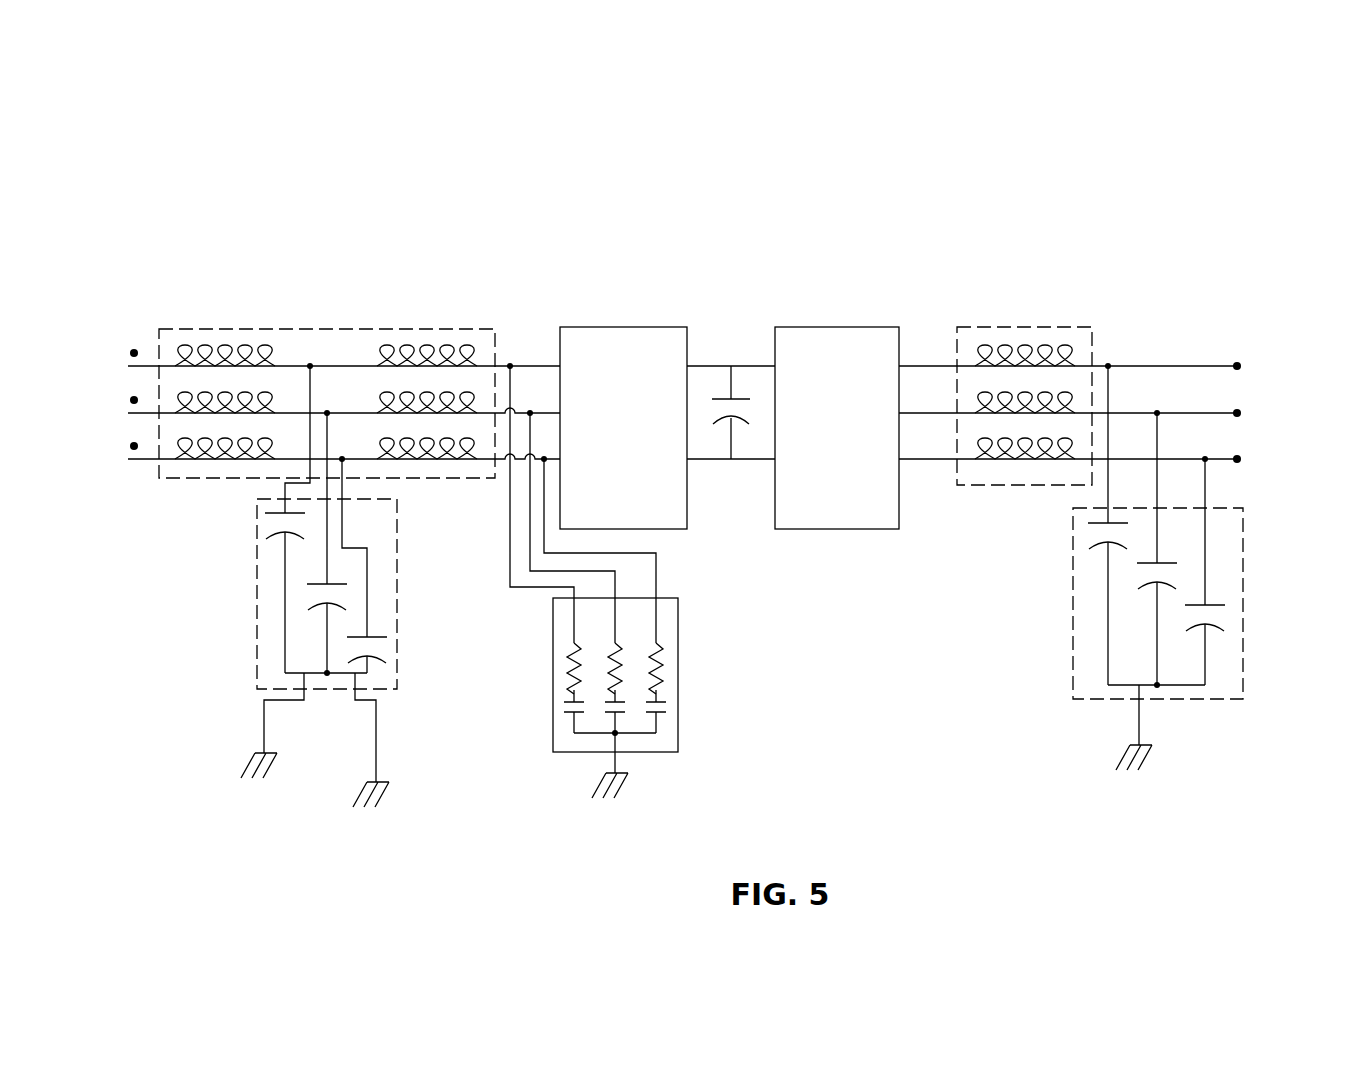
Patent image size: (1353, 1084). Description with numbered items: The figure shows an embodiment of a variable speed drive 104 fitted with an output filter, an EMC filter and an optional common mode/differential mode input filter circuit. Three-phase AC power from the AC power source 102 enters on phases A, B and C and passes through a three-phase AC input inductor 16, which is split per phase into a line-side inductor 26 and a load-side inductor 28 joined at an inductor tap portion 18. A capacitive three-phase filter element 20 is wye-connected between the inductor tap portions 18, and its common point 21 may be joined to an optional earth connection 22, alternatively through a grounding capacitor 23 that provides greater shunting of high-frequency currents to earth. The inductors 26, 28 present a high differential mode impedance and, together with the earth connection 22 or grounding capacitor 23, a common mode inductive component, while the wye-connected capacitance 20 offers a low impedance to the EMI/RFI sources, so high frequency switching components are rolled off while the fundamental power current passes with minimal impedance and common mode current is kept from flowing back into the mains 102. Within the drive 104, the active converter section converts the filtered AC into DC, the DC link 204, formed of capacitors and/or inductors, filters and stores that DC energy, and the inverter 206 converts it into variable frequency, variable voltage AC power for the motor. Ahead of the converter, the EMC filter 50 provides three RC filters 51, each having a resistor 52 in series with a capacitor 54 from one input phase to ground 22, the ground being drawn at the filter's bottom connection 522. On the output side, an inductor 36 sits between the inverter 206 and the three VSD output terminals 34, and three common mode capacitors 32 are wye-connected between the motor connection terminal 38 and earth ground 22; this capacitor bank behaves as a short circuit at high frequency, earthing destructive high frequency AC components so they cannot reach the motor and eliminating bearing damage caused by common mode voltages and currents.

The AC power source 102 is at (140, 282).
The variable speed drive 104 is at (729, 326).
The three-phase AC input inductor 16 is at (272, 328).
The line-side inductor 26 is at (213, 342).
The load-side inductor 28 is at (402, 342).
The inductor tap portion 18 is at (311, 364).
The capacitive three-phase filter element 20 is at (366, 661).
The common point 21 is at (327, 683).
The earth connection 22 is at (385, 790).
The grounding capacitor 23 is at (370, 635).
The inverter 206 is at (583, 327).
The DC link 204 is at (704, 338).
The output inductor 36 is at (1018, 327).
The VSD output terminal 34 is at (1108, 365).
The motor connection terminal 38 is at (1236, 365).
The common mode capacitor 32 is at (1220, 645).
The EMC filter 50 is at (638, 607).
The RC filter 51 is at (632, 615).
The resistor 52 is at (652, 666).
The capacitor 54 is at (662, 707).
The EMC filter ground 522 is at (622, 788).